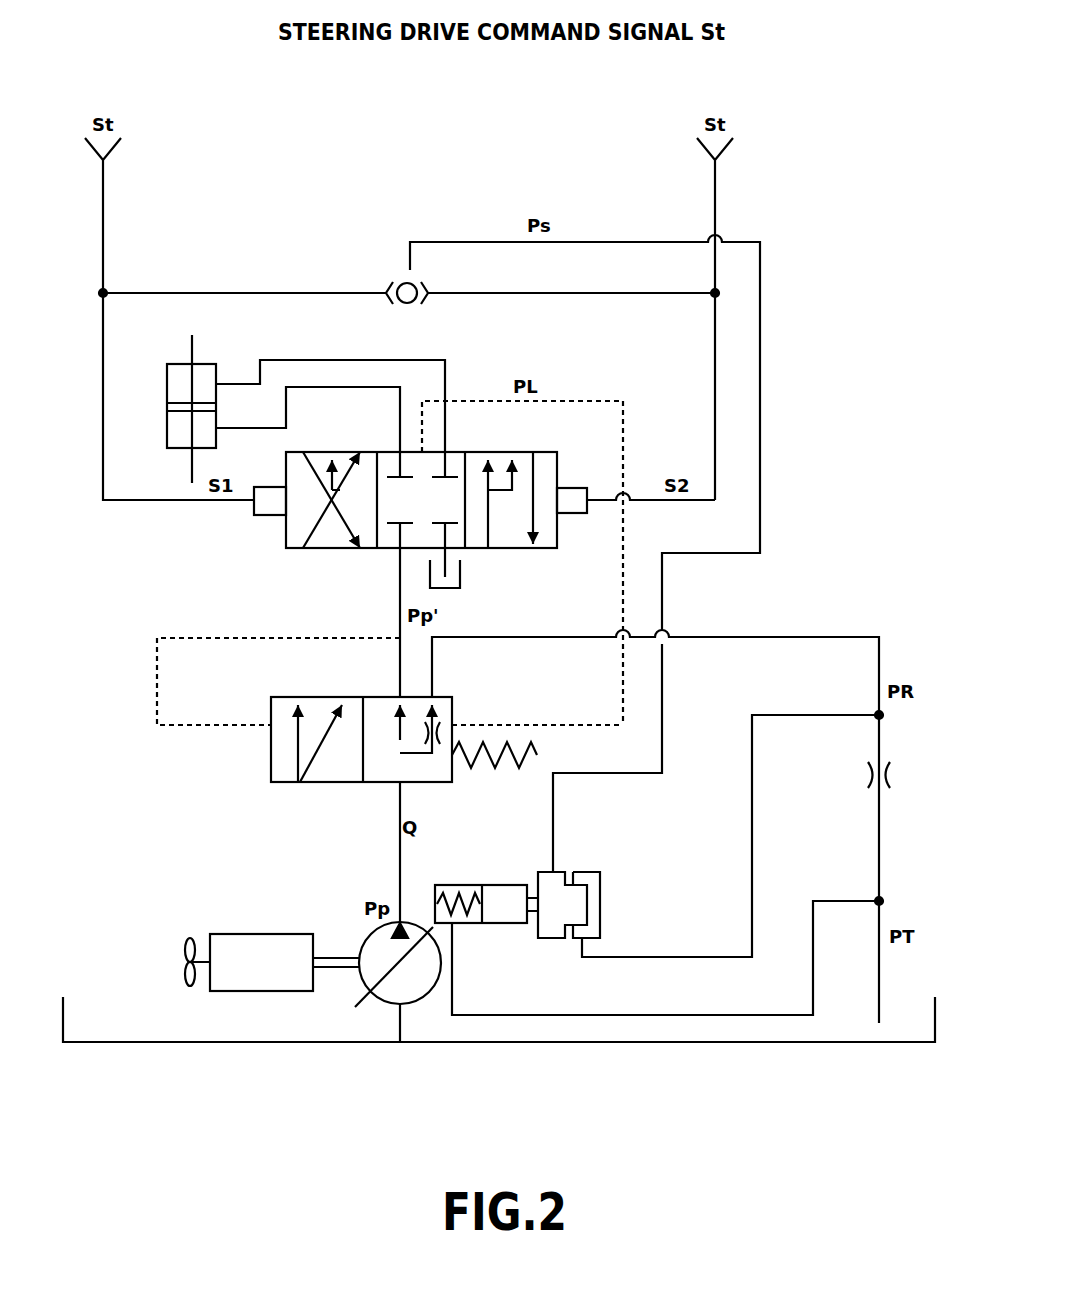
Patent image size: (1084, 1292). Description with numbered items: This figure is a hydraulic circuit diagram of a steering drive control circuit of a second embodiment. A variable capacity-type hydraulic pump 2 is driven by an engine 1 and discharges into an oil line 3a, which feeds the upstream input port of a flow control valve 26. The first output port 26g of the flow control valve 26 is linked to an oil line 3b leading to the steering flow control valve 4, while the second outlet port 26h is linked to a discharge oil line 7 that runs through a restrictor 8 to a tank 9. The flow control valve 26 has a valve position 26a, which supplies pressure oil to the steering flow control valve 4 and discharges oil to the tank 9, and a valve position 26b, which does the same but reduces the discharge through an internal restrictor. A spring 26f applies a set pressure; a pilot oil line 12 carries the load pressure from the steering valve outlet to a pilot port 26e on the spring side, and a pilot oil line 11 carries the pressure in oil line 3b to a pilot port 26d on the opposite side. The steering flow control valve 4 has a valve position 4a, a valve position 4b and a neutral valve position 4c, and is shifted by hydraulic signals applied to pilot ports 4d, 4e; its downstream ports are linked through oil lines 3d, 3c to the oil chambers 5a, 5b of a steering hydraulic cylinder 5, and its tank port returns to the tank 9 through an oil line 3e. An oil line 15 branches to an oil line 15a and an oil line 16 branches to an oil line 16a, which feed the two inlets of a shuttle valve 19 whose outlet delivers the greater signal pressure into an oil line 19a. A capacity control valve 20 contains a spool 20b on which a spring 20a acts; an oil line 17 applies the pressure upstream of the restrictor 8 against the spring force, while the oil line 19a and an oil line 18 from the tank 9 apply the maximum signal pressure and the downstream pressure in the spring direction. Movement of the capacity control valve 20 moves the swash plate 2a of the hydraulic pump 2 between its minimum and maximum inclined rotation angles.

The engine 1 is at (255, 934).
The variable capacity-type hydraulic pump 2 is at (388, 949).
The swash plate 2a is at (430, 926).
The oil line 3a is at (398, 873).
The oil line 3b is at (398, 626).
The oil line 3c is at (340, 387).
The oil line 3d is at (337, 360).
The oil line 3e is at (460, 566).
The steering flow control valve 4 is at (451, 504).
The valve position 4a is at (312, 550).
The valve position 4b is at (545, 550).
The neutral valve position 4c is at (383, 550).
The pilot port 4d is at (262, 517).
The pilot port 4e is at (575, 515).
The steering hydraulic cylinder 5 is at (140, 402).
The oil chamber 5a is at (174, 364).
The oil chamber 5b is at (176, 450).
The discharge oil line 7 is at (787, 636).
The restrictor 8 is at (894, 781).
The tank 9 is at (447, 590).
The pilot oil line 11 is at (193, 632).
The pilot oil line 12 is at (625, 540).
The oil line 15 is at (105, 182).
The oil line 15a is at (238, 293).
The oil line 16 is at (717, 188).
The oil line 16a is at (588, 296).
The oil line 17 is at (754, 777).
The oil line 18 is at (779, 1015).
The shuttle valve 19 is at (395, 282).
The oil line 19a is at (762, 296).
The capacity control valve 20 is at (535, 890).
The spring 20a is at (470, 885).
The spool 20b is at (560, 925).
The flow control valve 26 is at (341, 746).
The valve position 26a is at (295, 785).
The valve position 26b is at (375, 785).
The pilot port 26d is at (270, 720).
The pilot port 26e is at (453, 722).
The spring 26f is at (505, 770).
The first output port 26g is at (397, 697).
The second outlet port 26h is at (433, 697).